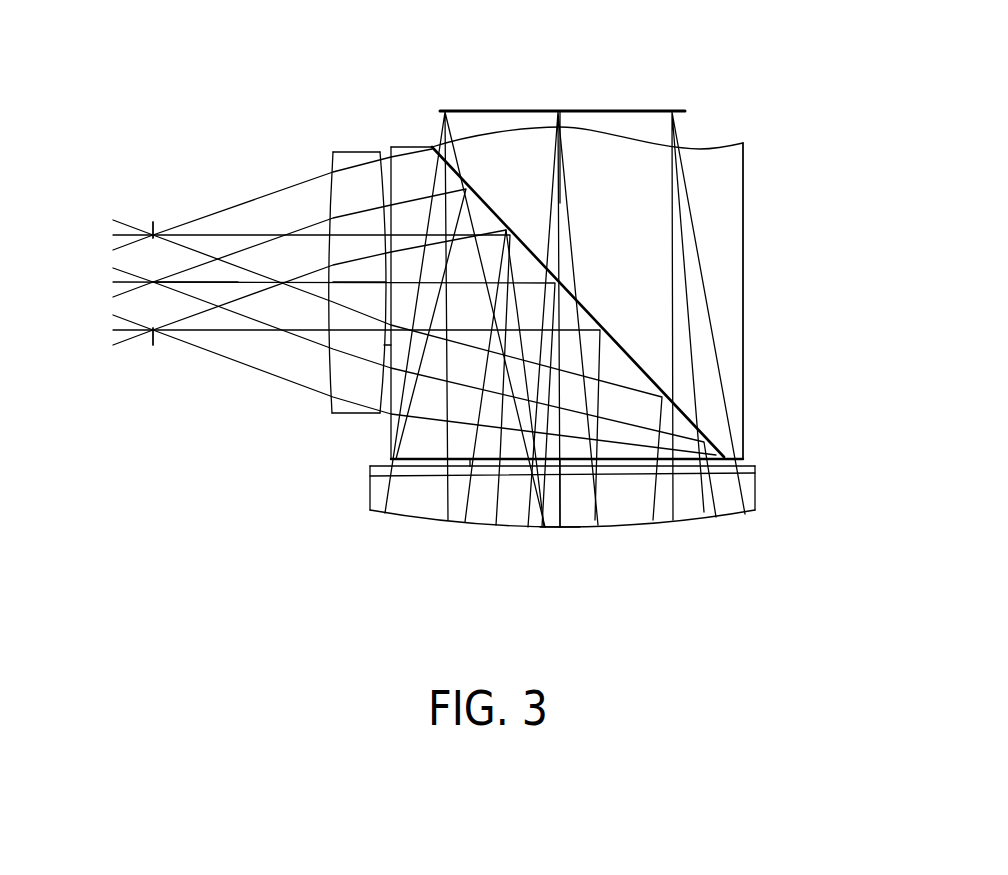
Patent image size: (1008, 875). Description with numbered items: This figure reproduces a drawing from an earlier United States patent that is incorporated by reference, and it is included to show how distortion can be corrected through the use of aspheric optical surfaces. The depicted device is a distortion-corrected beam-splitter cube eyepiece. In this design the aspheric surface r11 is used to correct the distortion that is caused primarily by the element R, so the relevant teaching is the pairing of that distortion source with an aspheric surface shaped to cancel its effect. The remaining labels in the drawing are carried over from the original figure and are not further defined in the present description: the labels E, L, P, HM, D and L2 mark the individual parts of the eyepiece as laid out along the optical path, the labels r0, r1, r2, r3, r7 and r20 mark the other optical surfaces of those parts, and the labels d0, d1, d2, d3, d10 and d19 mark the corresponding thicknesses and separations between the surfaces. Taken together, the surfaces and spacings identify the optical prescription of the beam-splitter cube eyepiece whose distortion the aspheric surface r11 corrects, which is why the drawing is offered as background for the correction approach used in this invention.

The eye / exit pupil E is at (153, 337).
The pupil surface r0 is at (158, 258).
The distance from pupil to lens L d0 is at (238, 282).
The lens L is at (350, 420).
The first surface of lens L r1 is at (333, 165).
The second surface of lens L r2 is at (384, 150).
The thickness of lens L d1 is at (345, 282).
The air gap between lens L and prism P d2 is at (383, 345).
The prism P is at (733, 323).
The entrance surface of prism P r3 is at (400, 147).
The top curved surface of prism toward display r20 is at (648, 110).
The aspheric surface r11 is at (718, 143).
The half mirror surface HM is at (605, 330).
The distance along prism axis d10 is at (560, 203).
The distance from prism top surface to display d19 is at (560, 127).
The display D is at (508, 110).
The second lens / mirror element L2 is at (748, 497).
The reflecting surface of lens L2 r7 is at (726, 518).
The primary distortion source R is at (568, 531).
The thickness of prism d3 is at (470, 283).